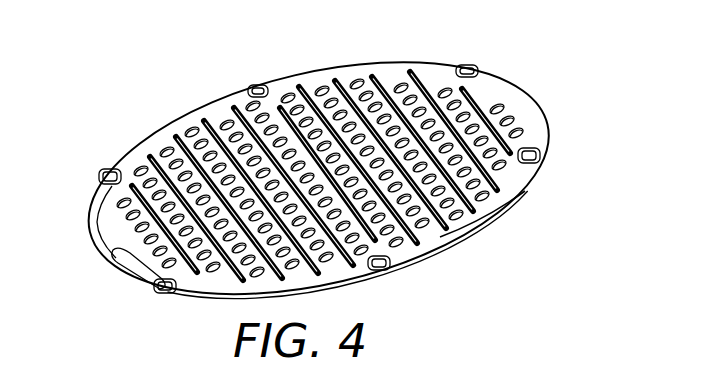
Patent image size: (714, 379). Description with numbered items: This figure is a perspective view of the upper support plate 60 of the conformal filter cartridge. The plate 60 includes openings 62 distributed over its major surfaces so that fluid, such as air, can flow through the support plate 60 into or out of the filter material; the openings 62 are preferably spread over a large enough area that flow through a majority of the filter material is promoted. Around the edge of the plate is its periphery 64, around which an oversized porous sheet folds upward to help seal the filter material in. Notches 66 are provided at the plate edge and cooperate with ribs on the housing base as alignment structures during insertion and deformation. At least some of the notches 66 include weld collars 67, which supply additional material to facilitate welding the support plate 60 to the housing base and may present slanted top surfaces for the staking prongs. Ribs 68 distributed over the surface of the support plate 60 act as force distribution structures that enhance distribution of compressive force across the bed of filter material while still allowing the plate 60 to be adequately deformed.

The upper support plate 60 is at (550, 98).
The openings 62 is at (503, 205).
The periphery 64 is at (463, 232).
The notches 66 is at (259, 85).
The weld collars 67 is at (100, 237).
The ribs 68 is at (410, 67).